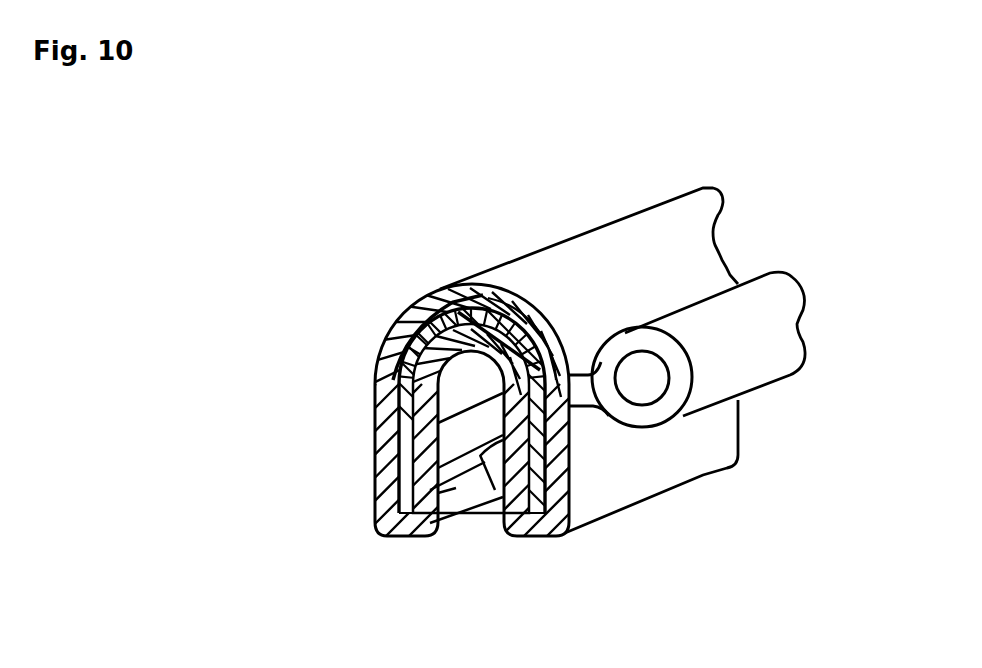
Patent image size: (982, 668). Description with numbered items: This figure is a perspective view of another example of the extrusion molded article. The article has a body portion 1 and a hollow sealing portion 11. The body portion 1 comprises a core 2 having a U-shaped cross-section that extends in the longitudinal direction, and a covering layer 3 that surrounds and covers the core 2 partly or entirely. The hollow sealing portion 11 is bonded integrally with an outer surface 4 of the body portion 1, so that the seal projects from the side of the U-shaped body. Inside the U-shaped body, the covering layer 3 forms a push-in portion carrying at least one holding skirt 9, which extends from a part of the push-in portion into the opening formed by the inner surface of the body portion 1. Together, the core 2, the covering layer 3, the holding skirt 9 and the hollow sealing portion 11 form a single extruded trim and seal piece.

The body portion 1 is at (560, 257).
The core 2 is at (407, 320).
The covering layer 3 is at (462, 352).
The outer surface 4 is at (378, 376).
The holding skirt 9 is at (458, 412).
The hollow sealing portion 11 is at (680, 380).